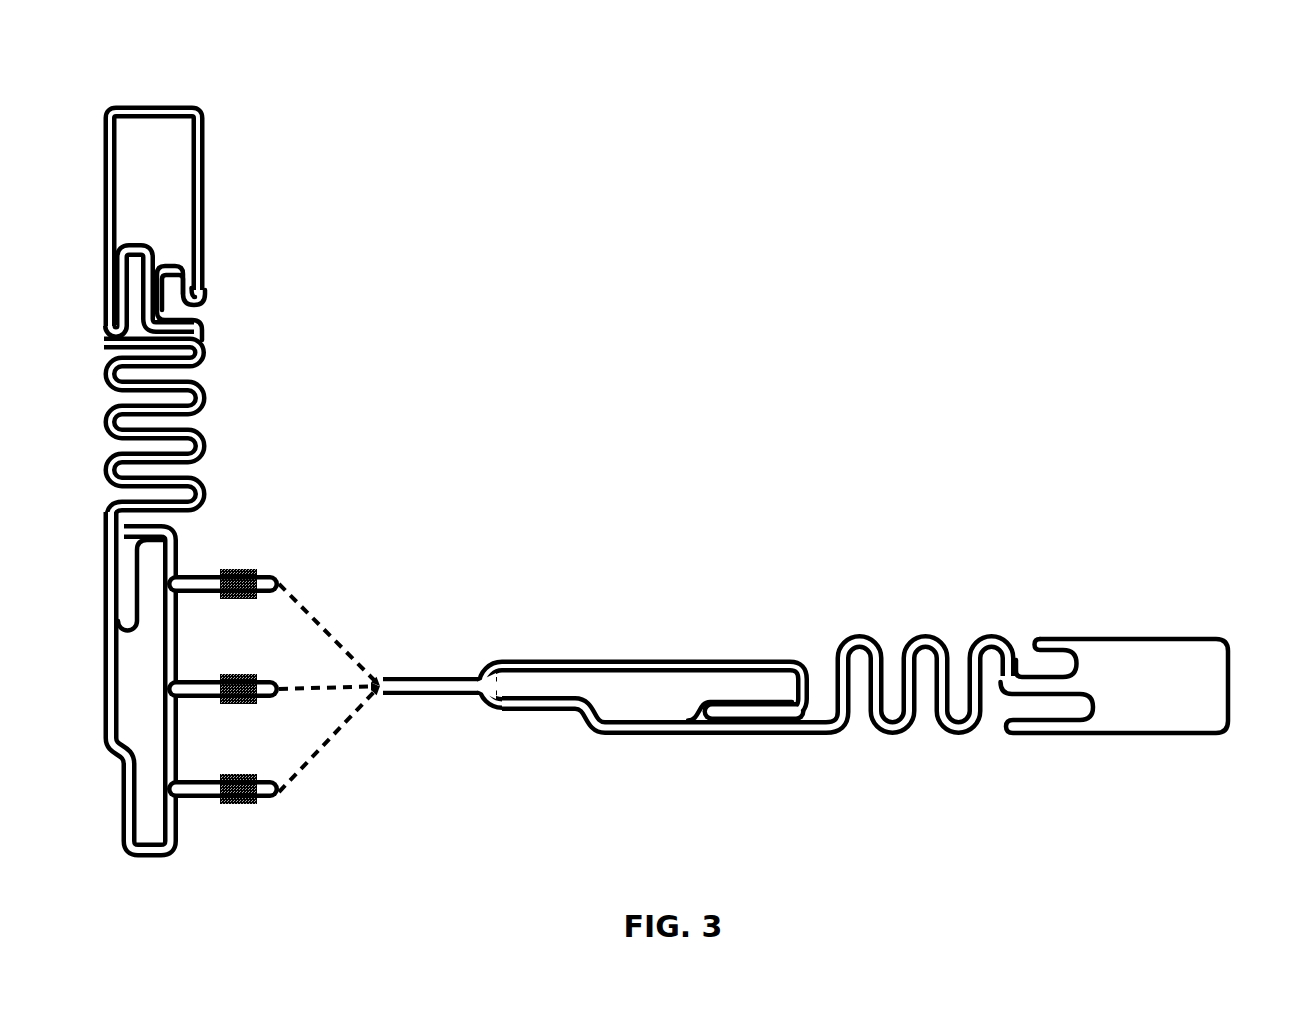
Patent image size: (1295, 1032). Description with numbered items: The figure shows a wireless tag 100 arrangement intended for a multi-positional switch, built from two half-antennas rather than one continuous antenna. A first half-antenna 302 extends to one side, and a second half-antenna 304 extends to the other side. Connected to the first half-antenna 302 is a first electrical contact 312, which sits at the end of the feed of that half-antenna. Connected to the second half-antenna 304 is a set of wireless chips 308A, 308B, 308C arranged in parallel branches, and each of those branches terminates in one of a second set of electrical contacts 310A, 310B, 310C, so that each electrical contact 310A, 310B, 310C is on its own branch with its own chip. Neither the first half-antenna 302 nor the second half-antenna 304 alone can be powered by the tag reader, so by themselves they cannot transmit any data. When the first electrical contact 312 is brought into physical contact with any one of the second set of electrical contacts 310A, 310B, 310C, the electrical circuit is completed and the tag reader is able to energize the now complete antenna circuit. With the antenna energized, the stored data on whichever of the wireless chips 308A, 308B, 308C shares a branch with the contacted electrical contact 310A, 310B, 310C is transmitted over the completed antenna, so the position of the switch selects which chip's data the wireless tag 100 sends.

The wireless tag 100 is at (318, 46).
The first half-antenna 302 is at (1233, 690).
The second half-antenna 304 is at (98, 183).
The wireless chip 308A is at (242, 806).
The wireless chip 308B is at (242, 704).
The wireless chip 308C is at (237, 569).
The electrical contact 310A is at (263, 805).
The electrical contact 310B is at (266, 679).
The electrical contact 310C is at (268, 574).
The first electrical contact 312 is at (388, 676).